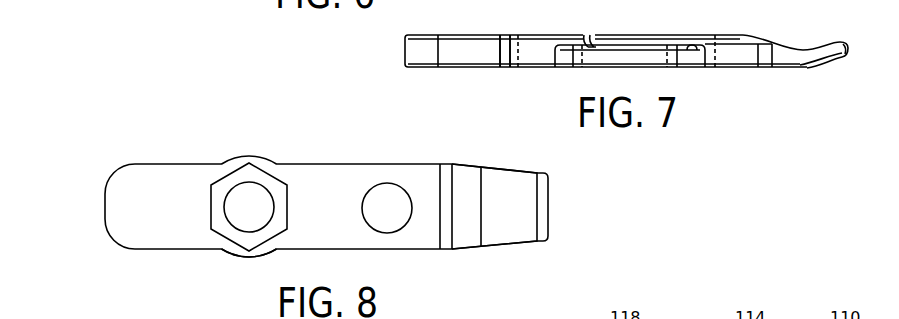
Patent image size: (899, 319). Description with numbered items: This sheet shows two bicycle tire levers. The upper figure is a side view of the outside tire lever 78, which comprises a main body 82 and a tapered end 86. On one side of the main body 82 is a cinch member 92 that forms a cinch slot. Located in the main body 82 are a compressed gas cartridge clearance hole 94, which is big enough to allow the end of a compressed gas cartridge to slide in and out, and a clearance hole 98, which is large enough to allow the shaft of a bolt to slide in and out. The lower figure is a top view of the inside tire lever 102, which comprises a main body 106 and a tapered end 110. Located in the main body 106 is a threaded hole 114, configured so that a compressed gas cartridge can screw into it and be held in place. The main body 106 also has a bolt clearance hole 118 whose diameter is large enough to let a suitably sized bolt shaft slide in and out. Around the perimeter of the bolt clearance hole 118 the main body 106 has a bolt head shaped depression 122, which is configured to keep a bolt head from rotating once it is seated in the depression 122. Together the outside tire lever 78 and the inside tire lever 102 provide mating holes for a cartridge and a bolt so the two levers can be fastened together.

In FIG. 7, the outside tire lever 78 is at (393, 52).
In FIG. 7, the main body 82 is at (488, 34).
In FIG. 7, the tapered end 86 is at (797, 47).
In FIG. 7, the cinch member 92 is at (610, 60).
In FIG. 7, the compressed gas cartridge clearance hole 94 is at (530, 58).
In FIG. 7, the clearance hole 98 is at (687, 35).
In FIG. 8, the inside tire lever 102 is at (135, 115).
In FIG. 8, the main body 106 is at (305, 168).
In FIG. 8, the tapered end 110 is at (507, 168).
In FIG. 8, the threaded hole 114 is at (389, 205).
In FIG. 8, the bolt clearance hole 118 is at (235, 222).
In FIG. 8, the bolt head shaped depression 122 is at (280, 241).